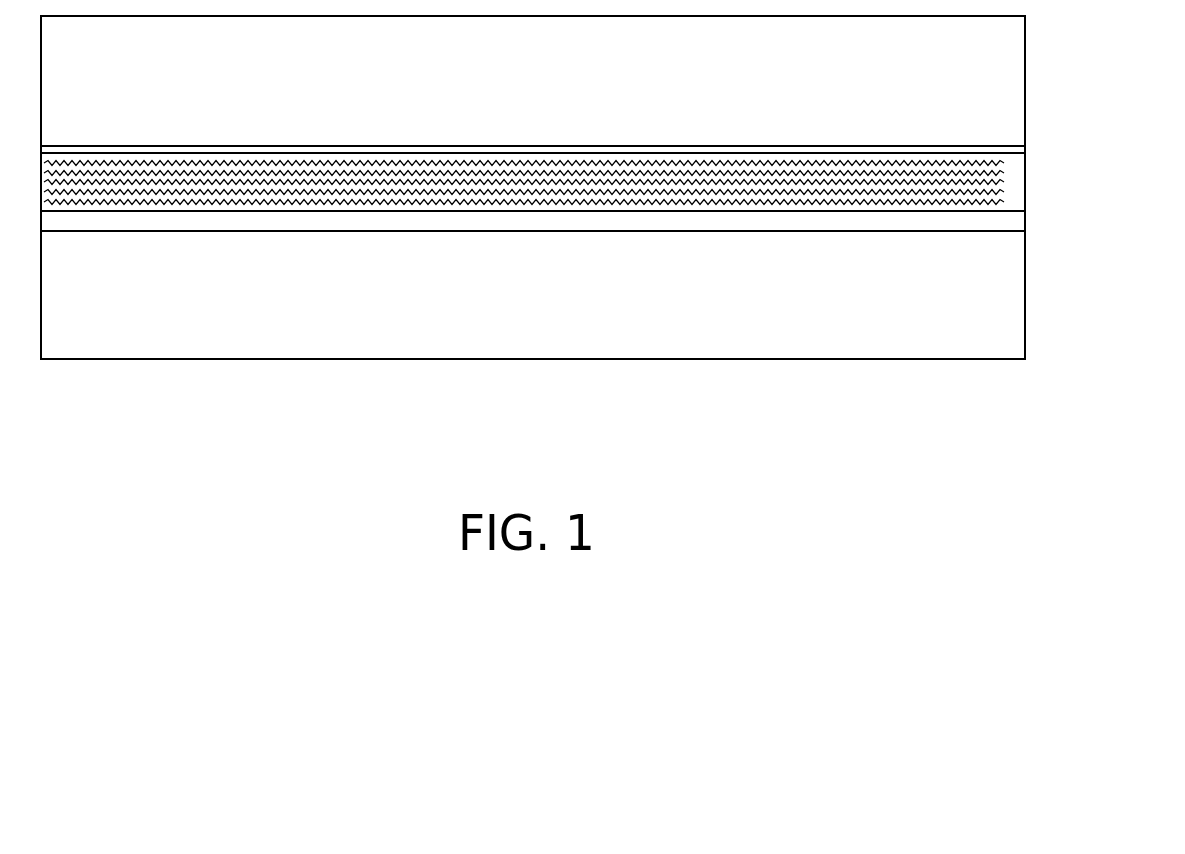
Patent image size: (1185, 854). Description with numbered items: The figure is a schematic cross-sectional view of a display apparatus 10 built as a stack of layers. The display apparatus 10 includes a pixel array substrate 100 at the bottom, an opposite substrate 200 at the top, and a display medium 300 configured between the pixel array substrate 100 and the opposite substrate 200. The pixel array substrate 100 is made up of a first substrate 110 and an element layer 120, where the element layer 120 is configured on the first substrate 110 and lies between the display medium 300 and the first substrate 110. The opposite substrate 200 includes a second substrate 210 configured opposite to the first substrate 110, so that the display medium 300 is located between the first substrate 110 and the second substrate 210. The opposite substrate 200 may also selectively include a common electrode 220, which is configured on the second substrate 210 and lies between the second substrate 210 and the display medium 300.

The display apparatus 10 is at (602, 233).
The pixel array substrate 100 is at (601, 285).
The first substrate 110 is at (1017, 268).
The element layer 120 is at (1015, 220).
The opposite substrate 200 is at (602, 85).
The second substrate 210 is at (1016, 75).
The common electrode 220 is at (1015, 150).
The display medium 300 is at (1017, 193).